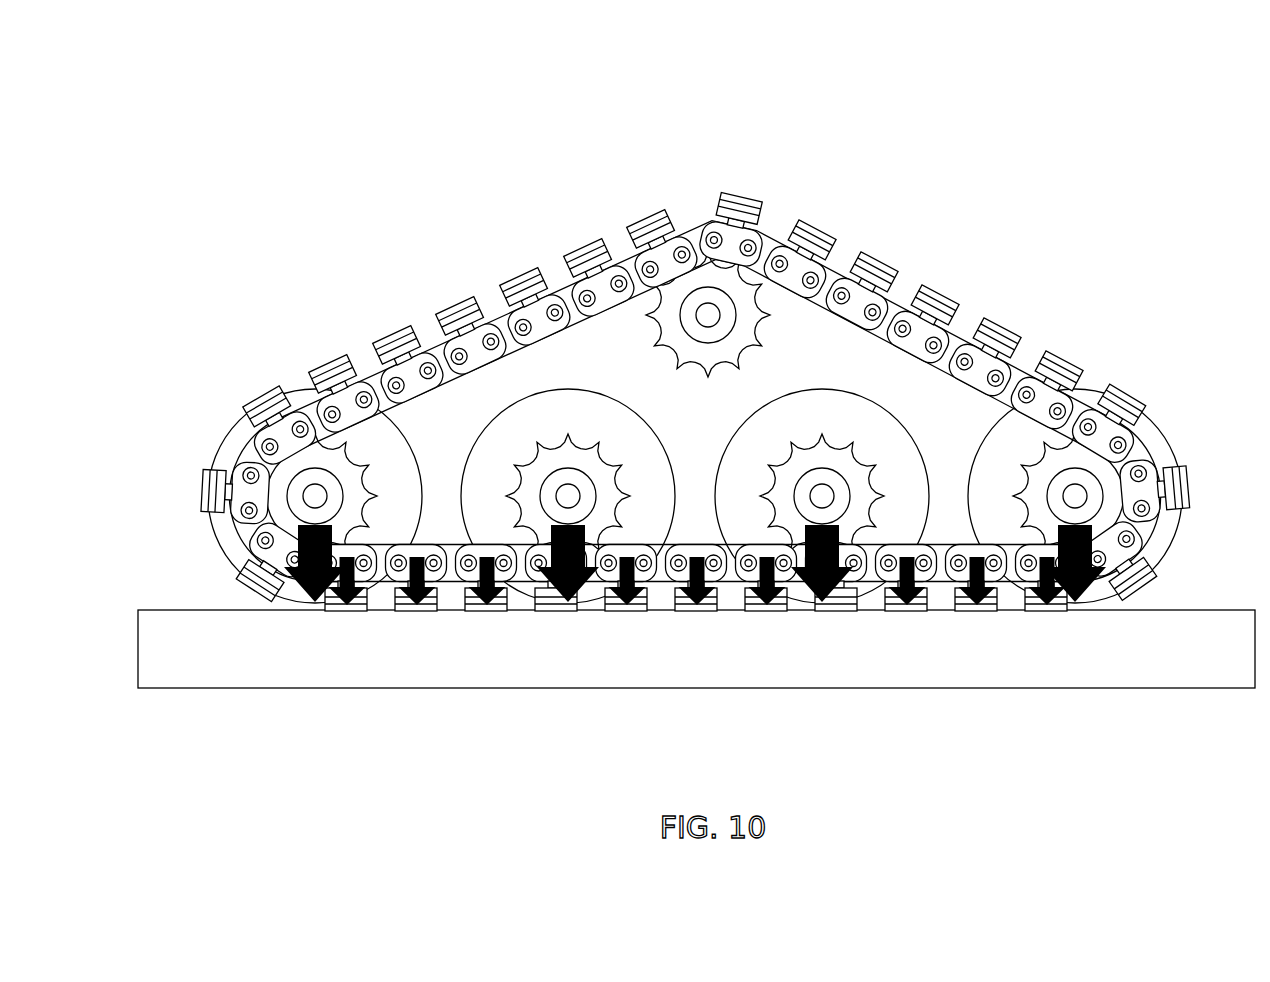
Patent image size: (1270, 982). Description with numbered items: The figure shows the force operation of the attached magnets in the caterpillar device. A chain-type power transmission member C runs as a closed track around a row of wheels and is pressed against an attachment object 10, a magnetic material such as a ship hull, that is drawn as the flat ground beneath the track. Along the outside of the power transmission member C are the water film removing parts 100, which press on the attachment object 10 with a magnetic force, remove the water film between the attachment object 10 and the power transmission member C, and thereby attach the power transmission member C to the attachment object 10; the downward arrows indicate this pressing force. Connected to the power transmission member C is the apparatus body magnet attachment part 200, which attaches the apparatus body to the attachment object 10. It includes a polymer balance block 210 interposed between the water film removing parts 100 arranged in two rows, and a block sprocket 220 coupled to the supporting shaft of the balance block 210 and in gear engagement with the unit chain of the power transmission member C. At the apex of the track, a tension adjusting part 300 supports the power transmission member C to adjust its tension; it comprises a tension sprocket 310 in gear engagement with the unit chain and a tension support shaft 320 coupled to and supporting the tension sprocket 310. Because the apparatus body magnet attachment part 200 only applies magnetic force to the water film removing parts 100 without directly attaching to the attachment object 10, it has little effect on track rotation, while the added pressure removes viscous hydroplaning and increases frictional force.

The attachment object 10 is at (670, 658).
The water film removing part 100 is at (735, 205).
The apparatus body magnet attachment part 200 is at (653, 471).
The balance block 210 is at (235, 440).
The block sprocket 220 is at (307, 393).
The tension adjusting part 300 is at (795, 211).
The tension sprocket 310 is at (752, 310).
The tension support shaft 320 is at (708, 315).
The power transmission member C is at (897, 298).